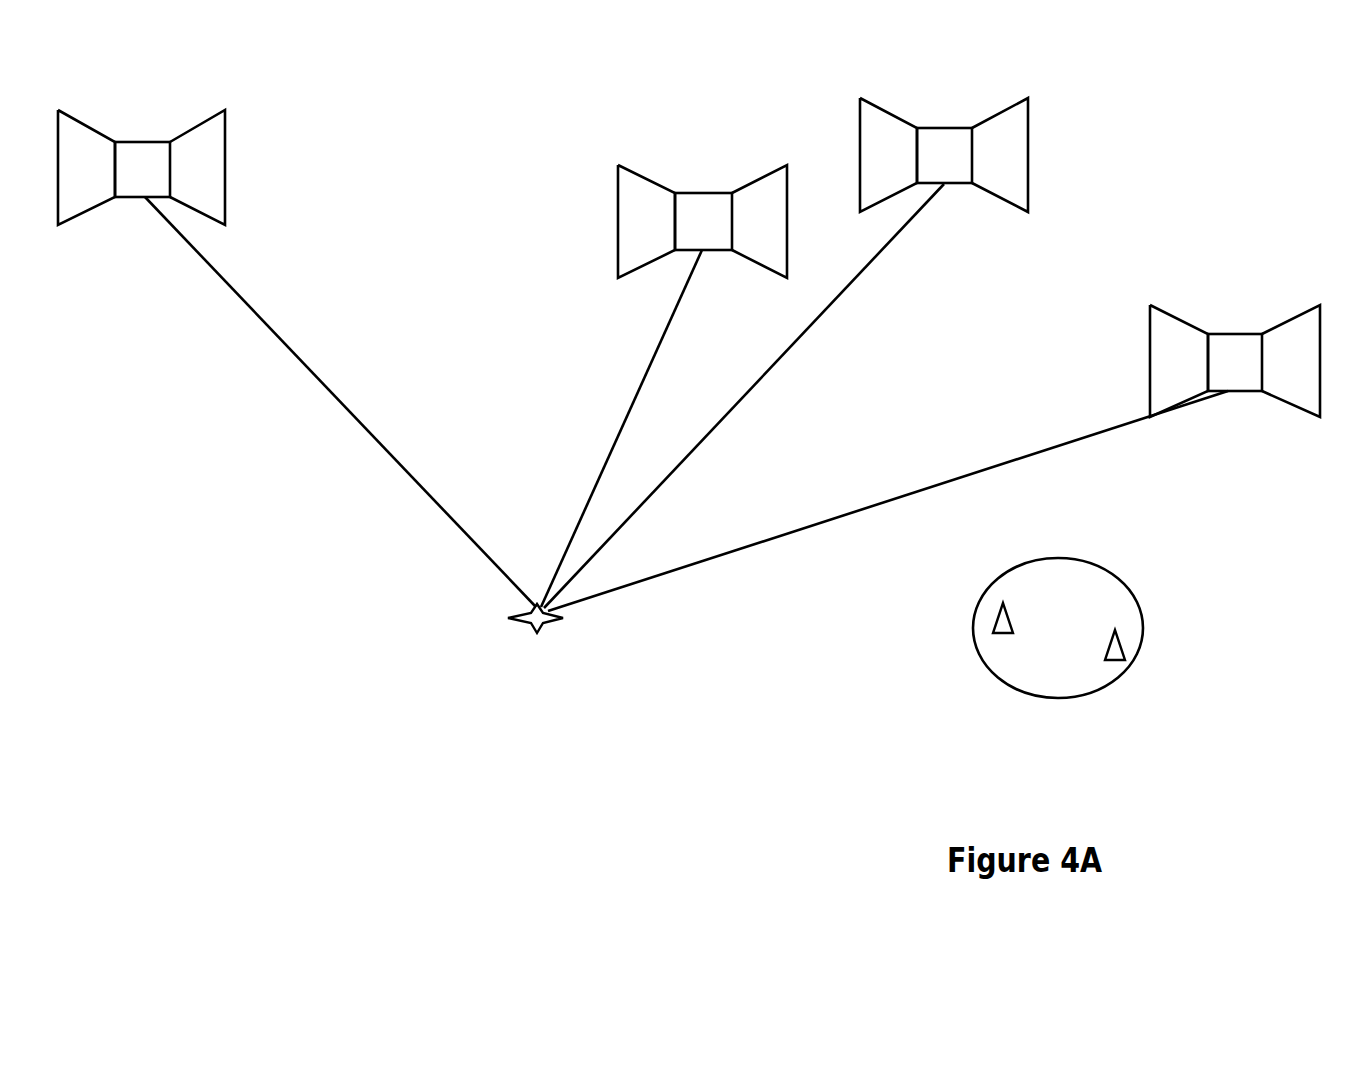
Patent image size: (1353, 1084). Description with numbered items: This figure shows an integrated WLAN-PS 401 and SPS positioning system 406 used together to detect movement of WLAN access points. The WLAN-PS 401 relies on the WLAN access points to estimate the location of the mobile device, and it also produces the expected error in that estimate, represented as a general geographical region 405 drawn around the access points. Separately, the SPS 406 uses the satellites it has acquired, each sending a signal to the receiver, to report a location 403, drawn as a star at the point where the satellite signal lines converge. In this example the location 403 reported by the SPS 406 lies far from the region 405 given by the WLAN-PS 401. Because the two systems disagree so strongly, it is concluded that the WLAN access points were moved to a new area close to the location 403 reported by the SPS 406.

The WLAN-PS 401 is at (1075, 663).
The location 403 is at (536, 645).
The expected error region 405 is at (1068, 557).
The SPS positioning system 406 is at (686, 497).